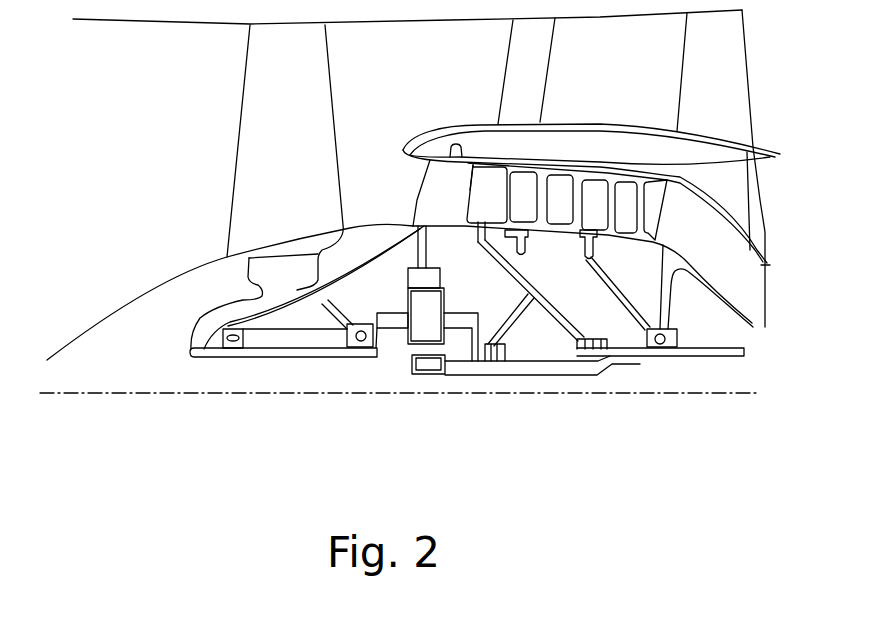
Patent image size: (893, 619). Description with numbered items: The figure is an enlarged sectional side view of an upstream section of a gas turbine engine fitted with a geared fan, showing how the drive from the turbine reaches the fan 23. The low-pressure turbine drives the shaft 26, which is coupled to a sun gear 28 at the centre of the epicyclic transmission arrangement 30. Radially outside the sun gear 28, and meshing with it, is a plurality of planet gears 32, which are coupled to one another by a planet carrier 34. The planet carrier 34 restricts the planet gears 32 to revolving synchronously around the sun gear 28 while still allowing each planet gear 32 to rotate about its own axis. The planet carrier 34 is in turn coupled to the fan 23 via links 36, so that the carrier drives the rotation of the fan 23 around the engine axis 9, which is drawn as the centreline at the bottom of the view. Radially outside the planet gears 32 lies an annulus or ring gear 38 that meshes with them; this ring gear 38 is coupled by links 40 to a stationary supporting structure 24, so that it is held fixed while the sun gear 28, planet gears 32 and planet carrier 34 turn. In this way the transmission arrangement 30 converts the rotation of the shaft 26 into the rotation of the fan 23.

The engine axis 9 is at (213, 394).
The fan 23 is at (250, 143).
The stationary supporting structure 24 is at (433, 190).
The shaft 26 is at (557, 378).
The sun gear 28 is at (426, 366).
The epicyclic transmission arrangement 30 is at (379, 360).
The planet gears 32 is at (401, 350).
The planet carrier 34 is at (461, 352).
The links 36 is at (385, 340).
The ring gear 38 is at (408, 277).
The links 40 is at (430, 258).